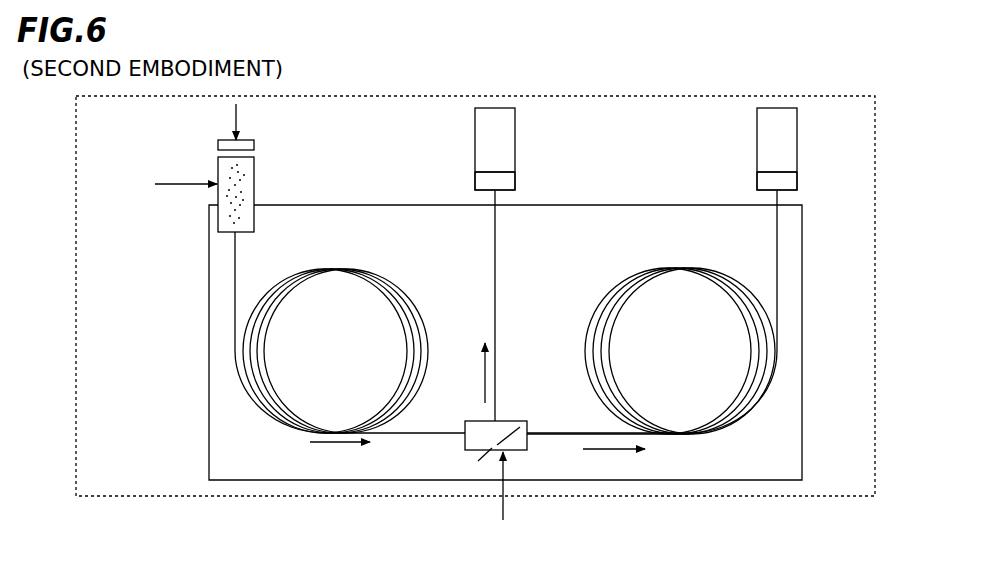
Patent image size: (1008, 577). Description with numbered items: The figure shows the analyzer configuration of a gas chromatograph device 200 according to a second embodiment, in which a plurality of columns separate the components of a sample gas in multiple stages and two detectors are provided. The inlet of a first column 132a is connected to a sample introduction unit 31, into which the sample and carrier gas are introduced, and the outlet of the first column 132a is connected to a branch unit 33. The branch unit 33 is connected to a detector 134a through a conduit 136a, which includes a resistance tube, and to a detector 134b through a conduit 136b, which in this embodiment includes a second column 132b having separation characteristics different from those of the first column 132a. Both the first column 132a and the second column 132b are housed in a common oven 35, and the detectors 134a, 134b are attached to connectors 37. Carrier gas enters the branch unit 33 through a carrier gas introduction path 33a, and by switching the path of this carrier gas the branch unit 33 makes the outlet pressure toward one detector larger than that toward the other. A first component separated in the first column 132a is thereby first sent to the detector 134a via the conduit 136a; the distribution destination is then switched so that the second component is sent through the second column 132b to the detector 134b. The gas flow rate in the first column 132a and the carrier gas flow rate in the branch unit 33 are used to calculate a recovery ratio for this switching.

The gas chromatograph device 200 is at (343, 95).
The sample introduction unit 31 is at (260, 175).
The branch unit 33 is at (509, 426).
The carrier gas introduction path 33a is at (508, 512).
The oven 35 is at (209, 330).
The connector 37 is at (517, 181).
The first column 132a is at (381, 269).
The second column 132b is at (702, 246).
The detector 134a is at (485, 147).
The detector 134b is at (770, 147).
The conduit 136a is at (500, 274).
The conduit 136b is at (697, 446).